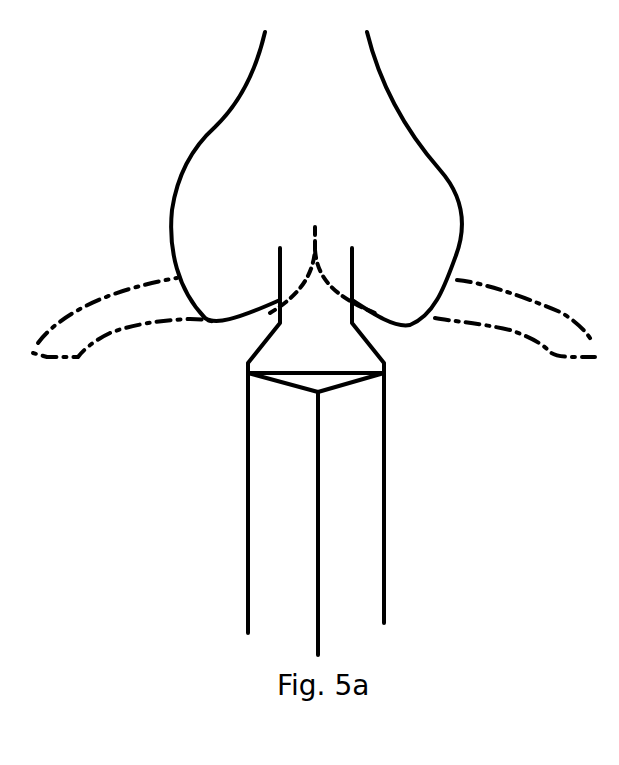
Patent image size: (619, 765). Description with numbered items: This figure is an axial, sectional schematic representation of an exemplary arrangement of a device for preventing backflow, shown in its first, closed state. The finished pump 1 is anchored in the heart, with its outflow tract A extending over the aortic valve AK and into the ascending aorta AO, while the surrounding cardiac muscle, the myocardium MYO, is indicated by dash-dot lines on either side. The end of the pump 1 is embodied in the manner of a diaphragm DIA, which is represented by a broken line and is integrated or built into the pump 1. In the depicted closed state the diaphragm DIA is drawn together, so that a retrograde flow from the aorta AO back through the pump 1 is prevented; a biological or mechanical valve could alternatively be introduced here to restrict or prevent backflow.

The ascending aorta AO is at (306, 115).
The diaphragm DIA is at (306, 247).
The aortic valve AK is at (224, 307).
The myocardium MYO is at (445, 318).
The outflow tract A is at (316, 387).
The pump 1 is at (450, 598).